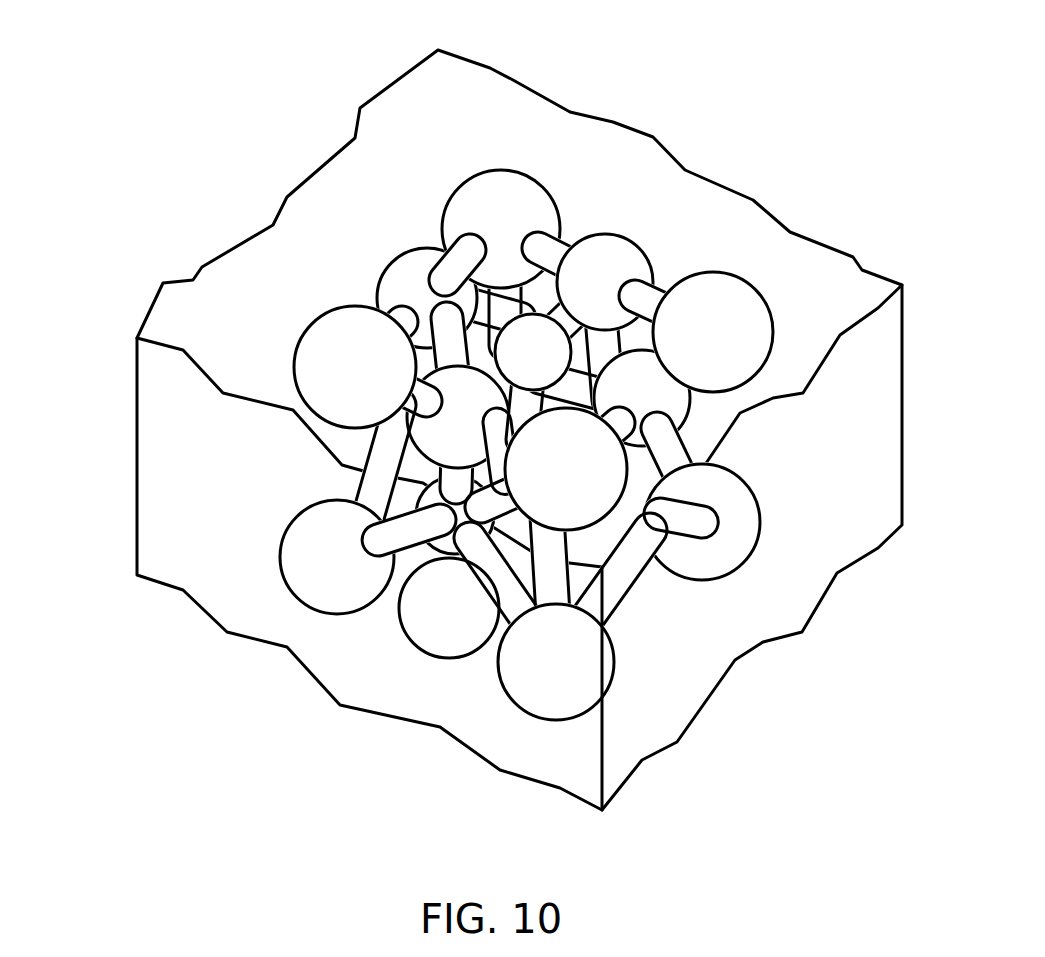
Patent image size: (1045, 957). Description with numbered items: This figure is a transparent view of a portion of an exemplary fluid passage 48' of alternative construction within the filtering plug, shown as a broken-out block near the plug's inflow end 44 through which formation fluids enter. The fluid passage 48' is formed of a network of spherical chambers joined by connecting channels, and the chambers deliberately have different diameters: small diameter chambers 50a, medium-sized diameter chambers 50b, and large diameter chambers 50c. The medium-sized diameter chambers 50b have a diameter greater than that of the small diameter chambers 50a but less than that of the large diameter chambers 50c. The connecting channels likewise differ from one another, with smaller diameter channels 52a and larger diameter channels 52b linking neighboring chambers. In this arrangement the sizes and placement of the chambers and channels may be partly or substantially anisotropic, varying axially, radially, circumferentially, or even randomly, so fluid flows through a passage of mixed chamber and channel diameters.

The inflow end 44 is at (250, 260).
The fluid passage 48' is at (592, 411).
The small diameter chambers 50a is at (528, 335).
The medium-sized diameter chambers 50b is at (407, 275).
The large diameter chambers 50c is at (492, 188).
The smaller diameter channels 52a is at (657, 300).
The larger diameter channels 52b is at (467, 347).